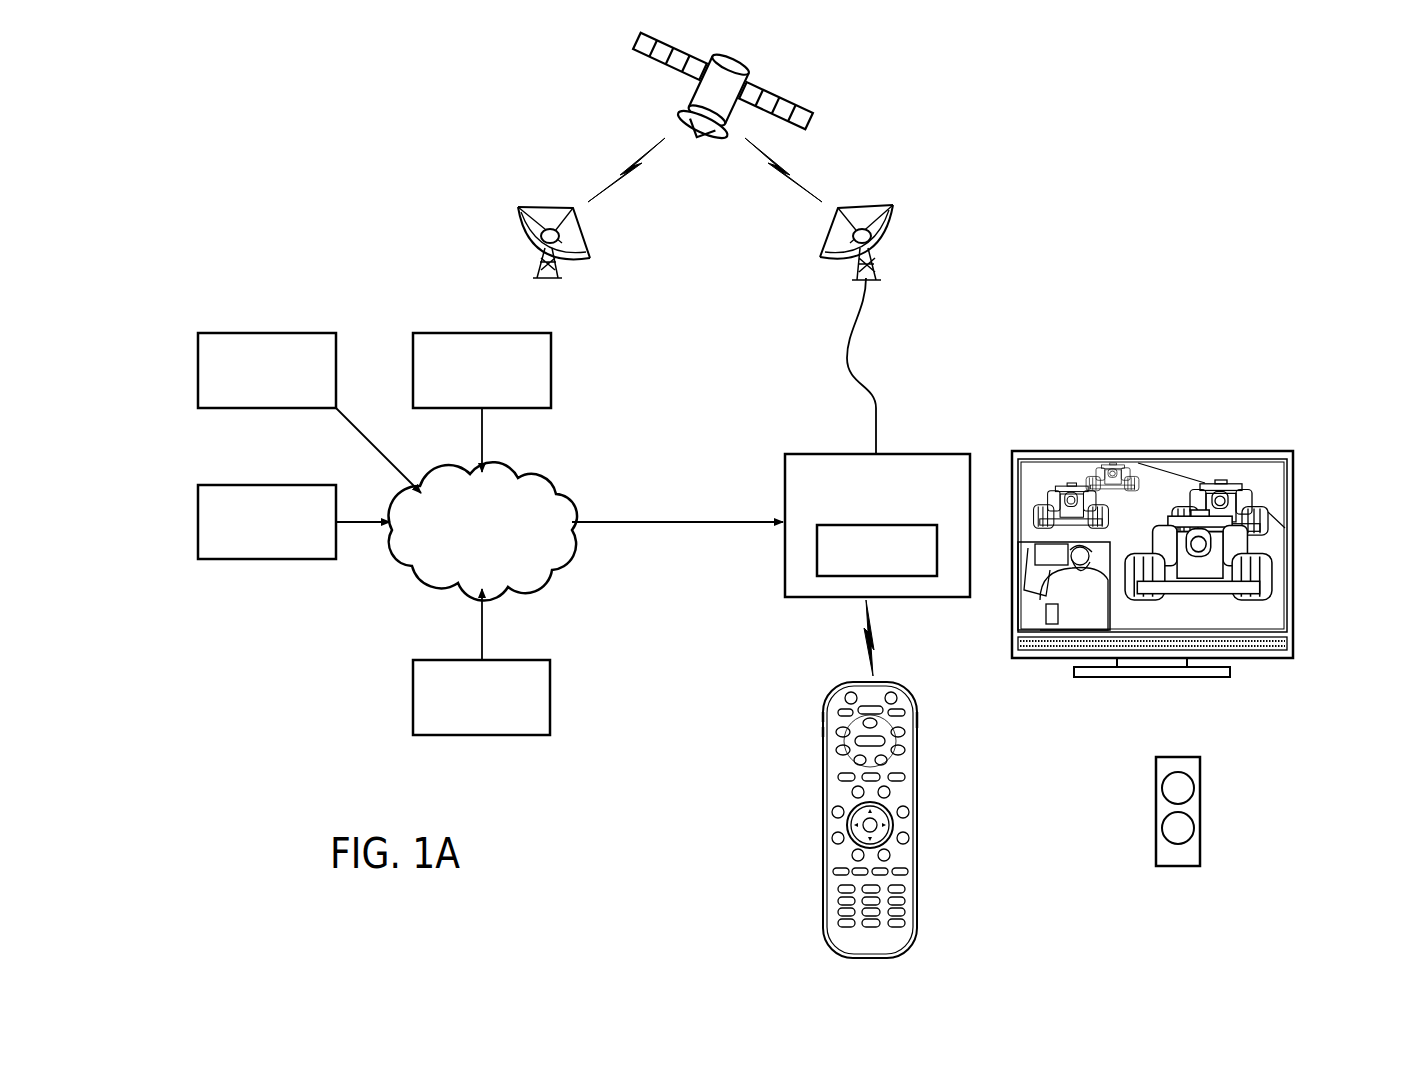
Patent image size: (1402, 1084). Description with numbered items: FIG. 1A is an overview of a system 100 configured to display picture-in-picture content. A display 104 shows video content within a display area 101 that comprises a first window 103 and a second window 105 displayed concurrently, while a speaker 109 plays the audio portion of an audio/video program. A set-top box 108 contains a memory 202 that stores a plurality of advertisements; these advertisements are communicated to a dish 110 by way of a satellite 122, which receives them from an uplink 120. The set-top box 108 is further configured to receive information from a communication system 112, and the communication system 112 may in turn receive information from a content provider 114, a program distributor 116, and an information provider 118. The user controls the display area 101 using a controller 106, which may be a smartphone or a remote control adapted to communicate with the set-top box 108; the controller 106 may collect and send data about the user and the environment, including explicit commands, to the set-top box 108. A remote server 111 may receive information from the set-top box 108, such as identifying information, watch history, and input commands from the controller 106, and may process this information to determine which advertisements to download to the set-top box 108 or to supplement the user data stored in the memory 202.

The system 100 is at (298, 172).
The display area 101 is at (1160, 541).
The first window 103 is at (1258, 568).
The display 104 is at (1108, 451).
The second window 105 is at (1038, 610).
The controller 106 is at (918, 760).
The set-top box 108 is at (844, 507).
The speaker 109 is at (1200, 810).
The dish 110 is at (888, 225).
The remote server 111 is at (242, 333).
The communication system 112 is at (537, 483).
The content provider 114 is at (258, 485).
The program distributor 116 is at (457, 333).
The information provider 118 is at (437, 660).
The uplink 120 is at (541, 218).
The satellite 122 is at (737, 72).
The memory 202 is at (817, 548).